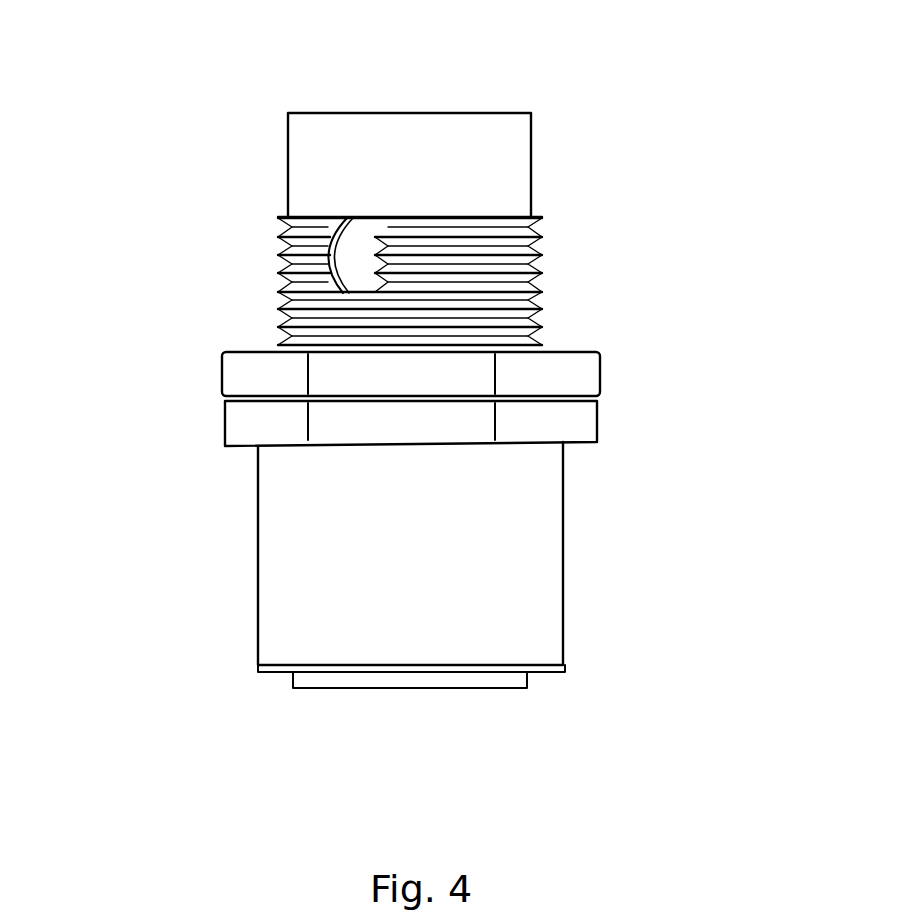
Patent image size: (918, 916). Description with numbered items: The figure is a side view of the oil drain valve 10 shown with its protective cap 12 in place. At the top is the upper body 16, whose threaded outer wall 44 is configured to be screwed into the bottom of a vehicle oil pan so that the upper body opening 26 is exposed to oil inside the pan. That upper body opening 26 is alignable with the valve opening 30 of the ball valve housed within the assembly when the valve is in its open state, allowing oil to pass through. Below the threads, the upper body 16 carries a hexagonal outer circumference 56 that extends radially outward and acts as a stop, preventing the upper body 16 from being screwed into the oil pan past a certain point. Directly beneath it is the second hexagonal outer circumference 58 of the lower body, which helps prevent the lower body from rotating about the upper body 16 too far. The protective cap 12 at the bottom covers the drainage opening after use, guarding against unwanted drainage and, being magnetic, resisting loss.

The oil drain valve 10 is at (173, 218).
The protective cap 12 is at (368, 575).
The upper body 16 is at (462, 182).
The upper body opening 26 is at (399, 155).
The valve opening 30 is at (352, 250).
The threaded outer wall 44 is at (307, 325).
The hexagonal outer circumference 56 is at (590, 373).
The second hexagonal outer circumference 58 is at (577, 435).